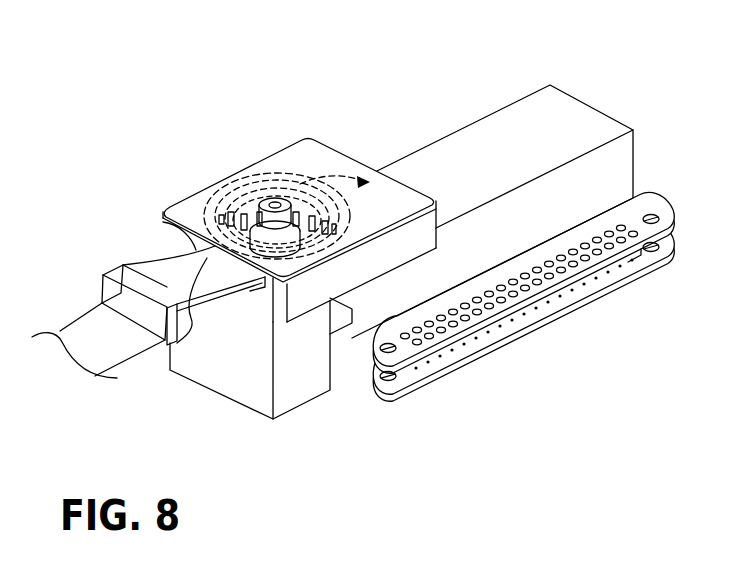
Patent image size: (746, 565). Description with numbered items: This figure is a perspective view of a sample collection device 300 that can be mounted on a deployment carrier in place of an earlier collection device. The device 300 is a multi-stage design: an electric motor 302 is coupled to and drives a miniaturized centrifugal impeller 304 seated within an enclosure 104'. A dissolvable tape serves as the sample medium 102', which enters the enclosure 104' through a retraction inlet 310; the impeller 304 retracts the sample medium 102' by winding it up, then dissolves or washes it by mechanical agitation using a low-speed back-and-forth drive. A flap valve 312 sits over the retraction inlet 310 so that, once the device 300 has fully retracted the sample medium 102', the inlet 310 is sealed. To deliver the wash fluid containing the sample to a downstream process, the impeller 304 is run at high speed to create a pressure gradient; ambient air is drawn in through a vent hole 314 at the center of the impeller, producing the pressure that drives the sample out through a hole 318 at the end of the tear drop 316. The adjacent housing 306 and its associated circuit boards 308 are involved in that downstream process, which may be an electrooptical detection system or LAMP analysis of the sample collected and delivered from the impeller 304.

The sample collection device 300 is at (464, 64).
The sample medium 102' is at (123, 300).
The enclosure 104' is at (287, 231).
The electric motor 302 is at (293, 397).
The centrifugal impeller 304 is at (242, 213).
The housing 306 is at (446, 148).
The circuit boards 308 is at (536, 310).
The retraction inlet 310 is at (140, 260).
The flap valve 312 is at (115, 272).
The vent hole 314 is at (276, 201).
The tear drop 316 is at (338, 173).
The hole 318 is at (372, 181).